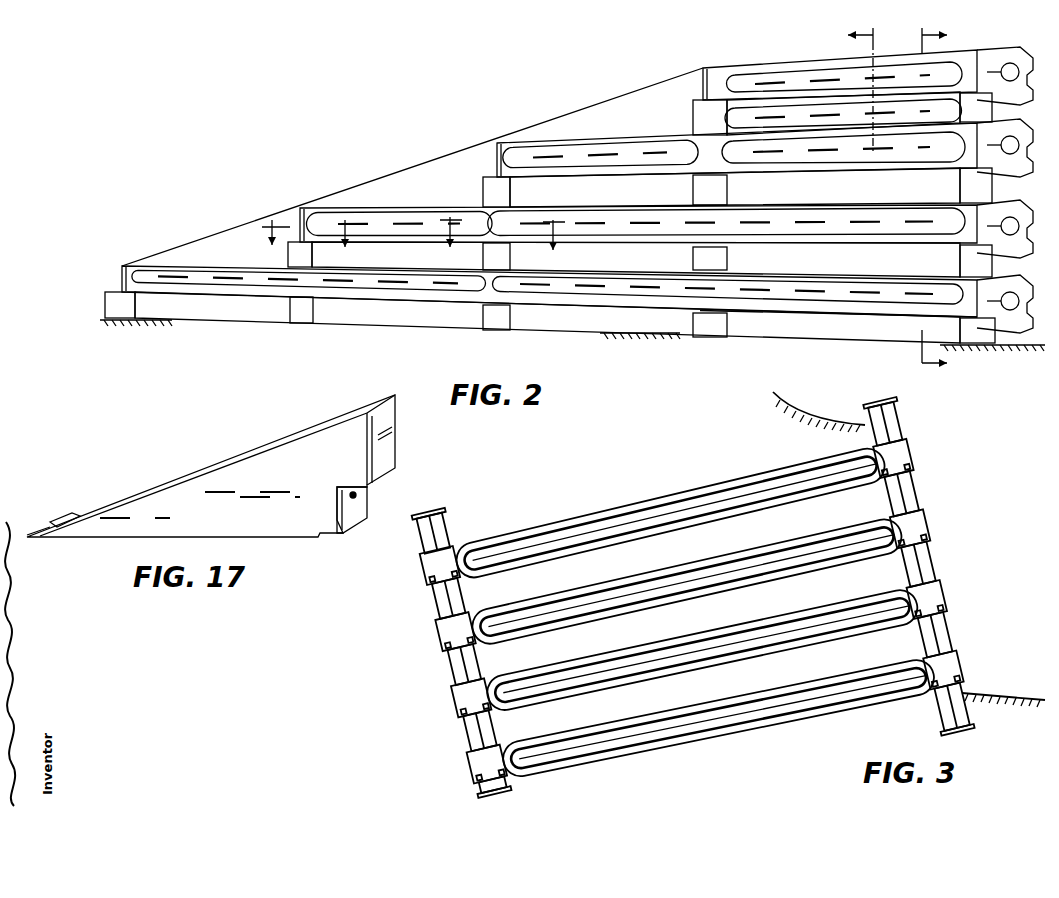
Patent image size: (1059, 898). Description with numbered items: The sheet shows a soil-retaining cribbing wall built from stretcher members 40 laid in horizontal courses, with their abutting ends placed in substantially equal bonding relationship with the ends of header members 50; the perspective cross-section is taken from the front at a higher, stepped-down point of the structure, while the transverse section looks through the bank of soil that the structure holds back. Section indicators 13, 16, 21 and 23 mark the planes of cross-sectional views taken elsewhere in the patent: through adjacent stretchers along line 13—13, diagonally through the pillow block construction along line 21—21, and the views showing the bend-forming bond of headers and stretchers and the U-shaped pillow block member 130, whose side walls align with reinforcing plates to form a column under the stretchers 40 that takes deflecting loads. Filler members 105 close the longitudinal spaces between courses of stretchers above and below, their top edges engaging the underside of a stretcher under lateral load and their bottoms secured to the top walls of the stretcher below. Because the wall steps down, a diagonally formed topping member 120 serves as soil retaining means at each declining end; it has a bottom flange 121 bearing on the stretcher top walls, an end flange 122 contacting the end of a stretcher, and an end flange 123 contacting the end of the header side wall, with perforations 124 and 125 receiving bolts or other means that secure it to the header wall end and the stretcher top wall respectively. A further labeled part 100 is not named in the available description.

In FIG. 2, the section line 13— 13 is at (873, 148).
In FIG. 2, the section line 16— 16 is at (950, 202).
In FIG. 2, the section line 21— 21 is at (505, 244).
In FIG. 2, the section line 23— 23 is at (303, 245).
In FIG. 2, the stretcher member 40 is at (843, 303).
In FIG. 3, the stretcher member 40 is at (437, 607).
In FIG. 2, the header member 50 is at (1000, 348).
In FIG. 3, the header member 50 is at (700, 492).
In FIG. 2, the spacer block 100 is at (494, 149).
In FIG. 2, the filler member 105 is at (588, 327).
In FIG. 2, the topping member 120 is at (207, 244).
In FIG. 17, the topping member 120 is at (263, 458).
In FIG. 17, the bottom flange 121 is at (78, 513).
In FIG. 17, the end flange 122 is at (393, 440).
In FIG. 17, the end flange 123 is at (350, 518).
In FIG. 17, the perforation 124 is at (358, 495).
In FIG. 17, the perforation 125 is at (55, 521).
In FIG. 2, the U-shaped member 130 is at (297, 320).